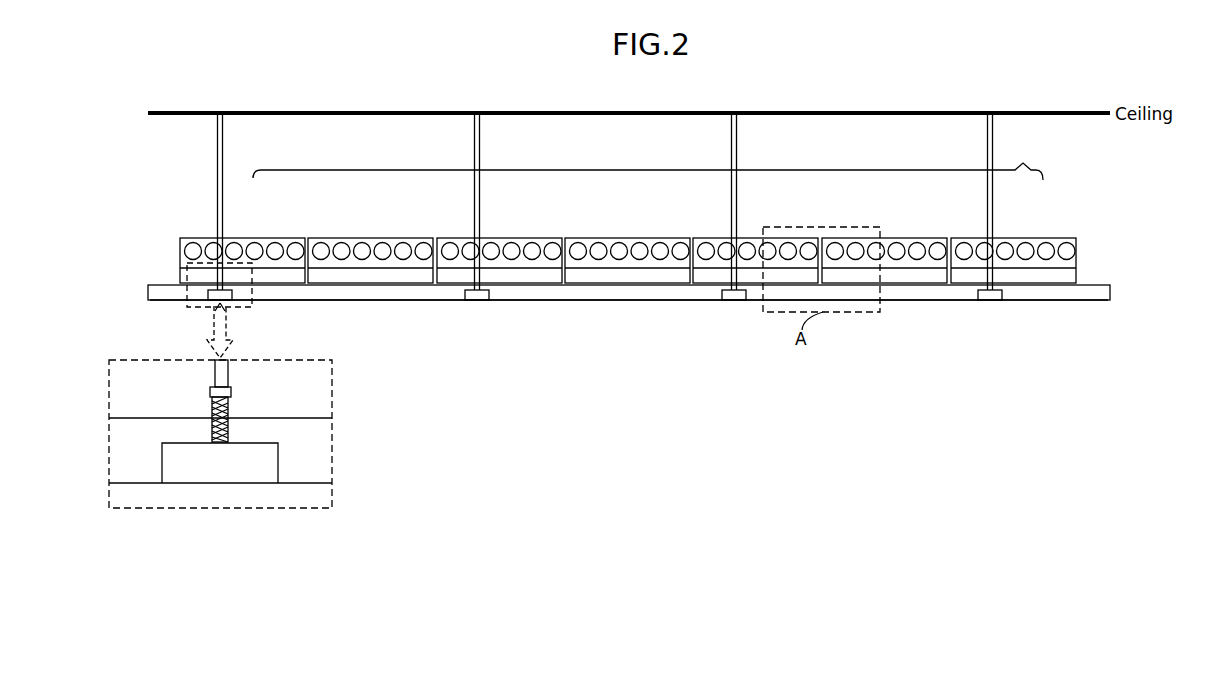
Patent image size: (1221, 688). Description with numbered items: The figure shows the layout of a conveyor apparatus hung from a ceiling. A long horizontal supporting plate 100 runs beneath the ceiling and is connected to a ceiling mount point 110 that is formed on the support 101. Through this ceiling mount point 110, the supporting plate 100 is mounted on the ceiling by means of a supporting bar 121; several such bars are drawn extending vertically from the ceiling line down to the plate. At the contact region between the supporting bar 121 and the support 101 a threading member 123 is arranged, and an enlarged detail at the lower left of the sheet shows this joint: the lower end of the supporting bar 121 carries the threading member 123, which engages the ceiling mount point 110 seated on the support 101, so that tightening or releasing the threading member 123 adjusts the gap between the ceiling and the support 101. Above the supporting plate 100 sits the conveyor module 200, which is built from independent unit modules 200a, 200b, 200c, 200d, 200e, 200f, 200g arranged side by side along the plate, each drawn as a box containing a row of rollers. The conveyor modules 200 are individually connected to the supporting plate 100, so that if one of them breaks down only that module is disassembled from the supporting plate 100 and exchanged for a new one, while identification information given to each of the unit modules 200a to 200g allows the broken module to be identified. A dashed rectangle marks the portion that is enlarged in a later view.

The supporting plate 100 is at (1112, 291).
The support 101 is at (1050, 300).
The ceiling mount point 110 is at (213, 297).
The supporting bar 121 is at (217, 138).
The threading member 123 is at (242, 411).
The conveyor module 200 is at (648, 161).
The unit module 200a is at (237, 231).
The unit module 200b is at (363, 232).
The unit module 200c is at (490, 232).
The unit module 200d is at (620, 233).
The unit module 200e is at (748, 235).
The unit module 200f is at (892, 235).
The unit module 200g is at (1008, 233).